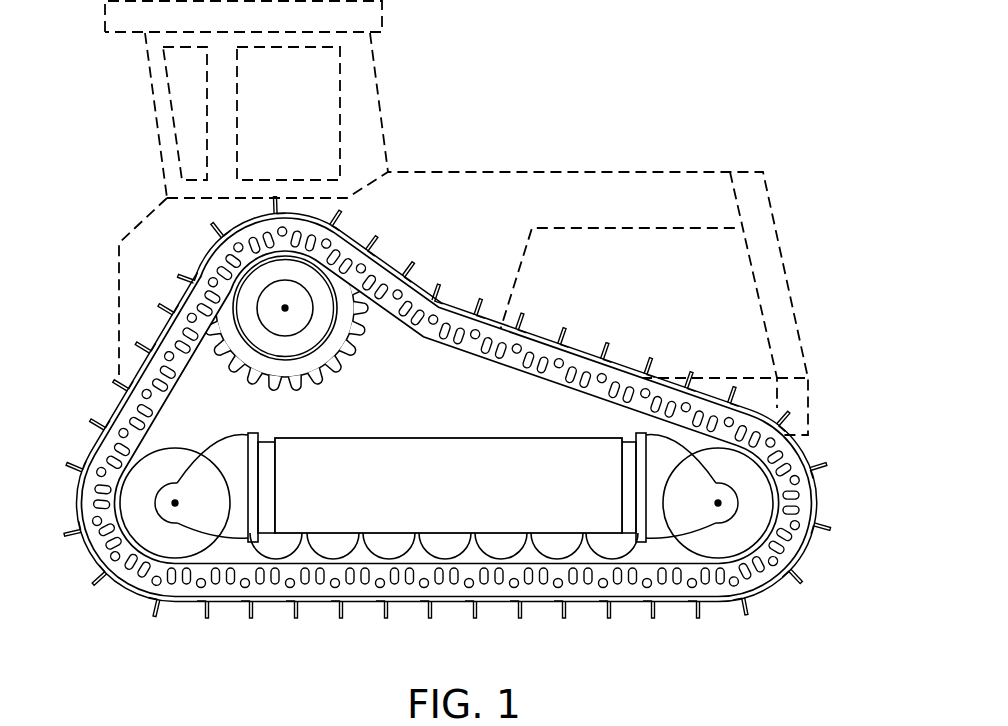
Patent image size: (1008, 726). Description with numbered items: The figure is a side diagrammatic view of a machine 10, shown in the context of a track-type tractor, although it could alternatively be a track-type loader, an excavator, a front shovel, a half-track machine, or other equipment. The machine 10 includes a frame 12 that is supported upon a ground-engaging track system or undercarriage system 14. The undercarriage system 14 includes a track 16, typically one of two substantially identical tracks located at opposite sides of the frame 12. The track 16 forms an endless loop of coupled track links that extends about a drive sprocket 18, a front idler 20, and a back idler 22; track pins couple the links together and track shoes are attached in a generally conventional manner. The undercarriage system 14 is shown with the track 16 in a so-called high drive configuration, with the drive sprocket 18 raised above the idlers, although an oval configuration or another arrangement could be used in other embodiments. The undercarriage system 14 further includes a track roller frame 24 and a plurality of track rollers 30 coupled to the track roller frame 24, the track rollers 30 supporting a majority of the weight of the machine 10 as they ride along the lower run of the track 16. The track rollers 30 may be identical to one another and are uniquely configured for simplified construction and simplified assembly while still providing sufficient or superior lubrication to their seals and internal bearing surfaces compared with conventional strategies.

The machine 10 is at (672, 88).
The frame 12 is at (119, 298).
The undercarriage system 14 is at (835, 496).
The track 16 is at (803, 548).
The drive sprocket 18 is at (300, 388).
The front idler 20 is at (720, 548).
The back idler 22 is at (181, 458).
The track roller frame 24 is at (452, 453).
The track rollers 30 is at (273, 553).